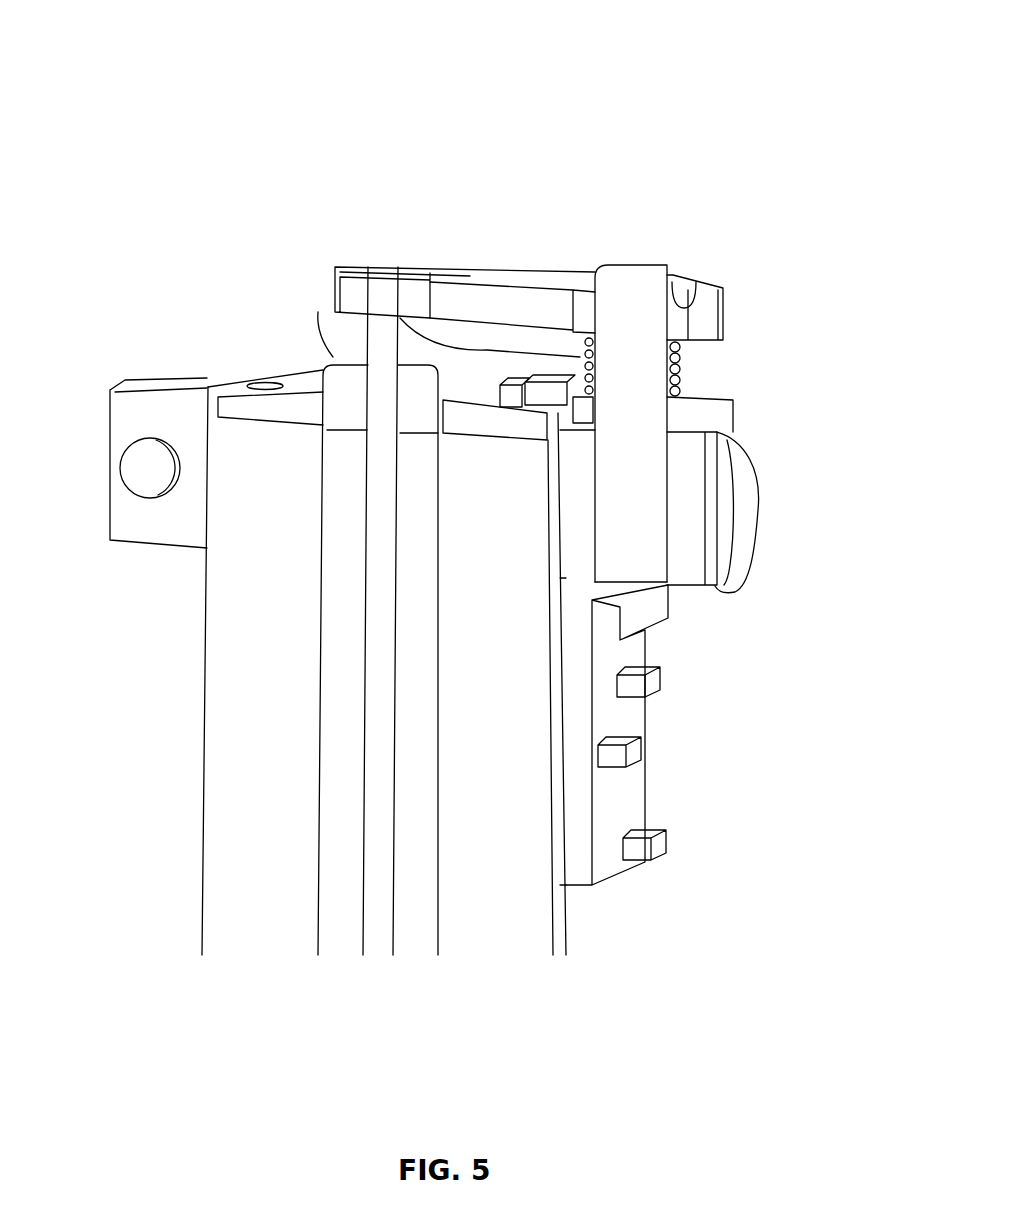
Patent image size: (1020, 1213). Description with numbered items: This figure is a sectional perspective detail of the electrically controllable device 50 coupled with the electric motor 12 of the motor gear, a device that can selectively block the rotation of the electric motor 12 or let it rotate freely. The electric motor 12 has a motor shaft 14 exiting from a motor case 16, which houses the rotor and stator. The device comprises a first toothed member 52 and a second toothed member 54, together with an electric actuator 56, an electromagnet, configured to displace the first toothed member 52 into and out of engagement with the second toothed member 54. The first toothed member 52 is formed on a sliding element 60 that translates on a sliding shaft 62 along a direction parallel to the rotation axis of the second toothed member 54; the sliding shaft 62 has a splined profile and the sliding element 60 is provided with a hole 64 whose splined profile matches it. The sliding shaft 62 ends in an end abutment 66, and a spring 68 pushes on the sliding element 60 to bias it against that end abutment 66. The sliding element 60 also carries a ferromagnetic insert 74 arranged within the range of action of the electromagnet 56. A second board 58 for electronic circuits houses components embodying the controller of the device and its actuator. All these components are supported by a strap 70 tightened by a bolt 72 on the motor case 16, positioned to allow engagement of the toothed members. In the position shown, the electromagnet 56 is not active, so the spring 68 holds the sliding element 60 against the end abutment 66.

The electric motor 12 is at (197, 672).
The motor shaft 14 is at (382, 330).
The motor case 16 is at (248, 770).
The electrically controllable device 50 is at (715, 136).
The first toothed member 52 is at (468, 268).
The second toothed member 54 is at (362, 268).
The electric actuator 56 is at (700, 418).
The second board 58 is at (618, 792).
The sliding element 60 is at (513, 275).
The sliding shaft 62 is at (637, 290).
The hole 64 is at (598, 305).
The end abutment 66 is at (689, 323).
The spring 68 is at (680, 365).
The strap 70 is at (120, 415).
The bolt 72 is at (140, 462).
The ferromagnetic insert 74 is at (680, 323).